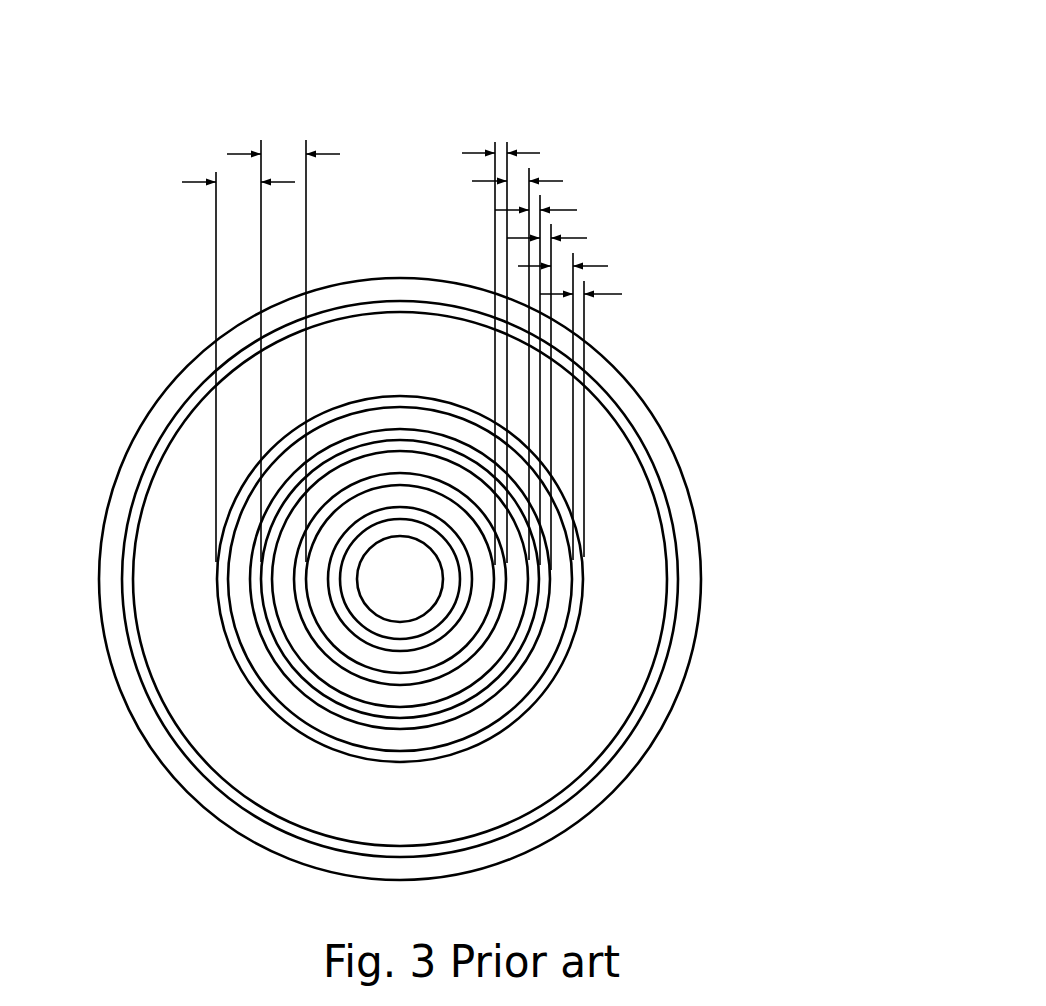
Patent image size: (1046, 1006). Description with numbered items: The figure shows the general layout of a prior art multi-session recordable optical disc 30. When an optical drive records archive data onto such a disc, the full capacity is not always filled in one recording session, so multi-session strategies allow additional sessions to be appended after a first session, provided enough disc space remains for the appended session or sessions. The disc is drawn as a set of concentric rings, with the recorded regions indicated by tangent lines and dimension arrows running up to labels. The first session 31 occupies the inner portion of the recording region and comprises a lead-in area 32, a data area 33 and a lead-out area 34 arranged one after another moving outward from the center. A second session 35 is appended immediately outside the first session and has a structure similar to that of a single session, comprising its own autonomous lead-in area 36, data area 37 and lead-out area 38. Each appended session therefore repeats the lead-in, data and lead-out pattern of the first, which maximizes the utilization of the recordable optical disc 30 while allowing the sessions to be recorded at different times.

The multi-session recordable optical disc 30 is at (641, 45).
The session 1 31 is at (115, 155).
The lead-in area 32 is at (745, 157).
The data area 33 is at (757, 187).
The lead-out area 34 is at (822, 213).
The session 2 35 is at (101, 196).
The lead-in area 36 is at (817, 241).
The data area 37 is at (797, 270).
The lead-out area 38 is at (820, 307).